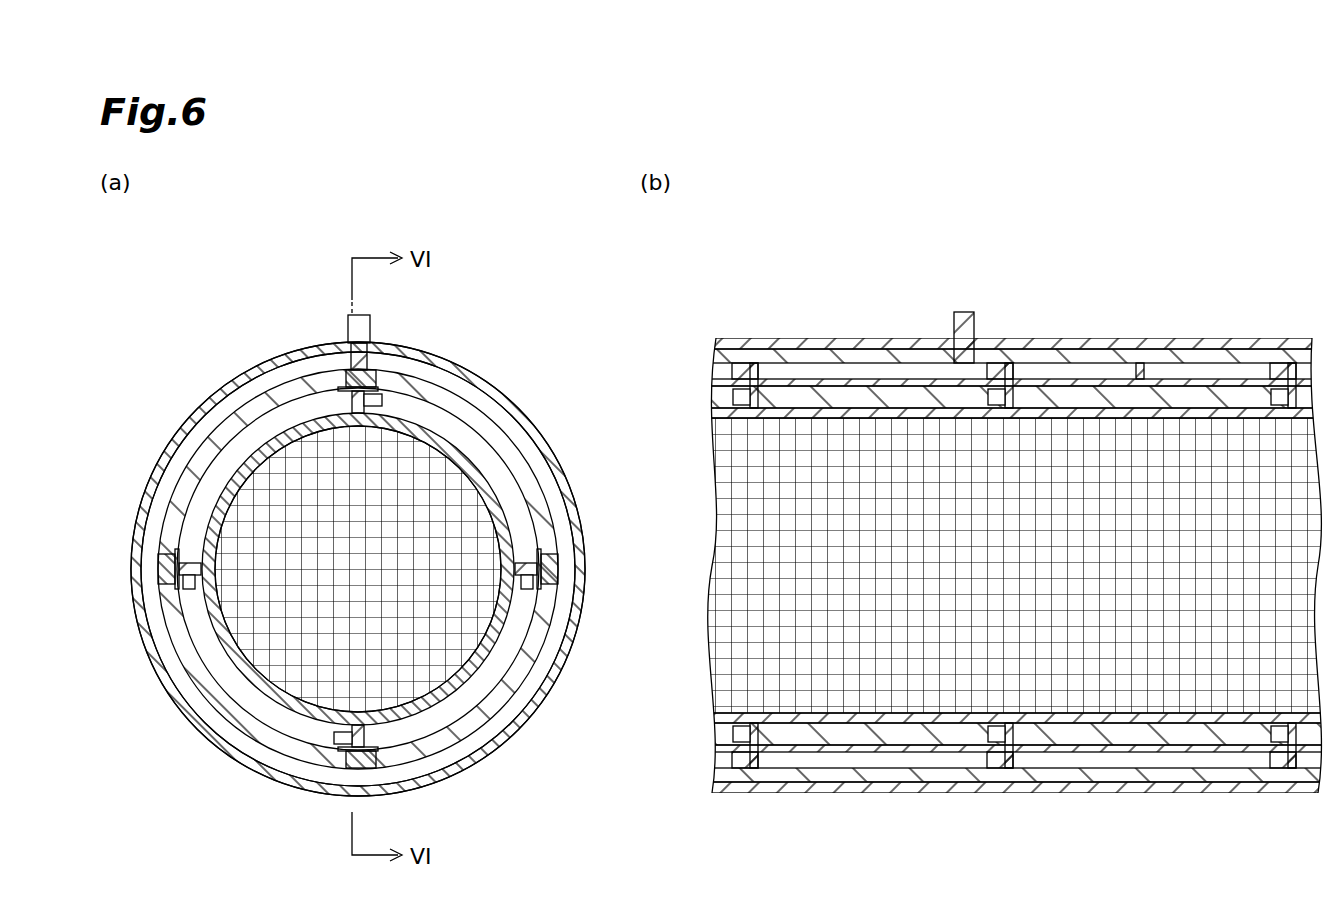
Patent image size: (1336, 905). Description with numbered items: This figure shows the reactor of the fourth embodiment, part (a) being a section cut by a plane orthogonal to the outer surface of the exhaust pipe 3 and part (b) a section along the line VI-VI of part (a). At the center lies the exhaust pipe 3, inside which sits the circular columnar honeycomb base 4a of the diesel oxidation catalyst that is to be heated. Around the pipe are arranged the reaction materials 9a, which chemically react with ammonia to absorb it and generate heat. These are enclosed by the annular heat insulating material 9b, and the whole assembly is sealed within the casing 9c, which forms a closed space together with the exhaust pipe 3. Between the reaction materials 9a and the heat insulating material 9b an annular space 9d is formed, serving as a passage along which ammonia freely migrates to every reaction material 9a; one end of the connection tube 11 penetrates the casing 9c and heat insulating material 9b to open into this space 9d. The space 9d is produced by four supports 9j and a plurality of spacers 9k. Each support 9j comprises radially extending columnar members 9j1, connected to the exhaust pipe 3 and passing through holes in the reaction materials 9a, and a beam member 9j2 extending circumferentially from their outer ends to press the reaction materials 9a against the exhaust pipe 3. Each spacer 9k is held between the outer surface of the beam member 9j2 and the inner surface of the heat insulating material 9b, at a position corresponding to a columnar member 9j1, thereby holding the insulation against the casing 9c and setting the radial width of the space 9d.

The exhaust pipe 3 is at (295, 697).
The honeycomb base 4a is at (280, 653).
The reaction material 9a is at (267, 432).
The heat insulating material 9b is at (150, 483).
The casing 9c is at (183, 435).
The space 9d is at (172, 523).
The support 9j is at (377, 380).
The columnar member 9j1 is at (383, 397).
The beam member 9j2 is at (377, 387).
The spacer 9k is at (333, 383).
The connection tube 11 is at (343, 328).